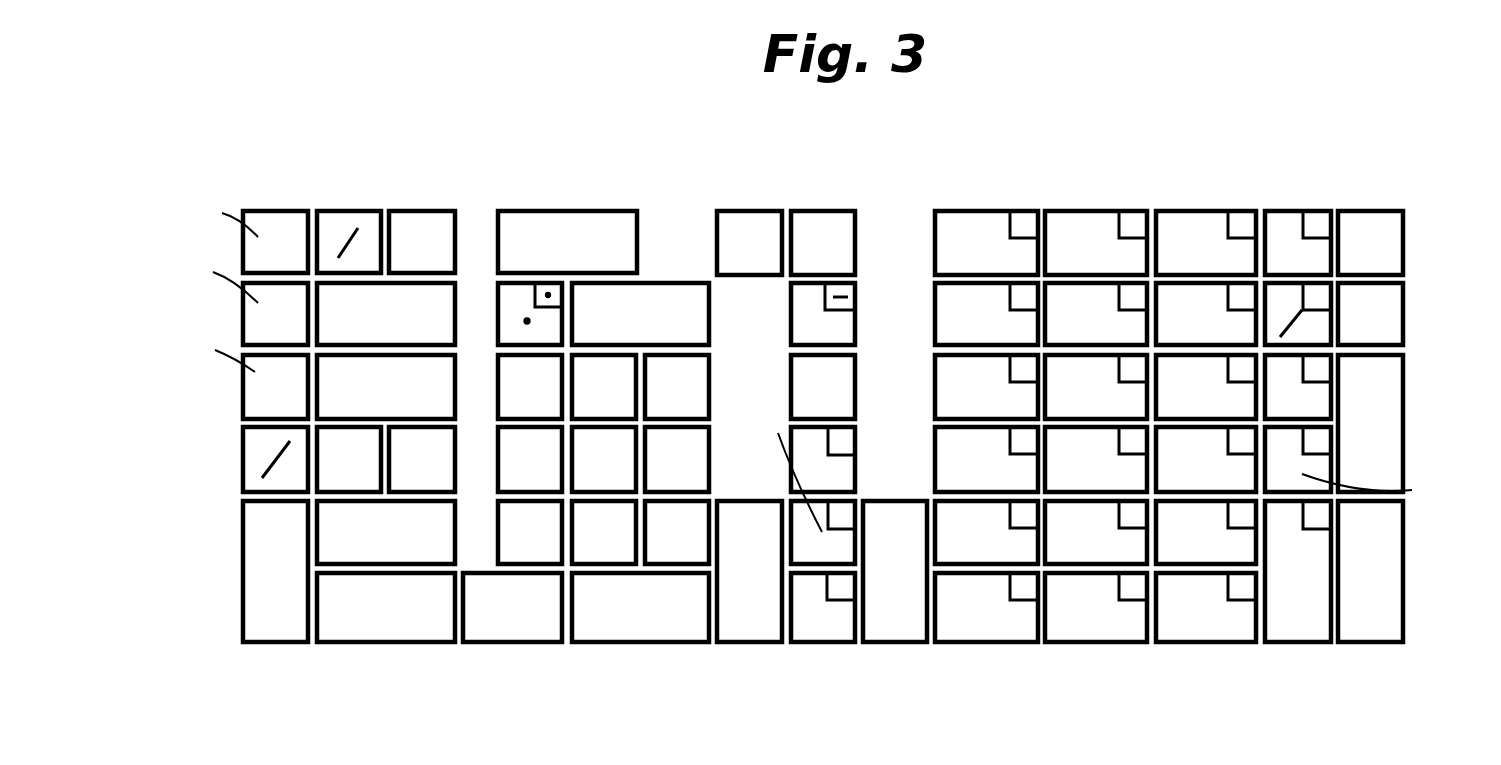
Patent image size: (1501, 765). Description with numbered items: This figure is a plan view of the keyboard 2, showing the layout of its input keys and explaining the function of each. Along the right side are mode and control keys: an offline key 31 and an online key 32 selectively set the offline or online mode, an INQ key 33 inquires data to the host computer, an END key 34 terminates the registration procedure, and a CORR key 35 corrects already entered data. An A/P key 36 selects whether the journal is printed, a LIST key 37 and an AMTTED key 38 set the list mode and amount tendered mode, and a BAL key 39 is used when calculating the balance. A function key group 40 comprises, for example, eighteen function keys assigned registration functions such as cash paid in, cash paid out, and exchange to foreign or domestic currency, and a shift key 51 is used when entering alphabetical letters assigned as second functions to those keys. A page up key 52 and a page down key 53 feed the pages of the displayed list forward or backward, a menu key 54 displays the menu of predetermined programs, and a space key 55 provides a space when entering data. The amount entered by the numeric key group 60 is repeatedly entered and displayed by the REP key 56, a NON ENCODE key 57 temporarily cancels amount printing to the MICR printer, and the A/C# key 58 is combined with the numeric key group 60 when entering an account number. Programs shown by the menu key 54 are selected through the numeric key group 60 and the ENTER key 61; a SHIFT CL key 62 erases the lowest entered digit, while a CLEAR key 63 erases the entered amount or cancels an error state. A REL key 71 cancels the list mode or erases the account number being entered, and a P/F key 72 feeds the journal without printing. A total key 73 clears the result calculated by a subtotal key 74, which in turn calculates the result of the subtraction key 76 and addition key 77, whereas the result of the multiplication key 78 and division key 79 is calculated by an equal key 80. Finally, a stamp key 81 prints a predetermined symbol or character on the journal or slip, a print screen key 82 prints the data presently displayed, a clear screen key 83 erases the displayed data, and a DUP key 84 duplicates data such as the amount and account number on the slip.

The keyboard 2 is at (1302, 76).
The offline key 31 is at (1366, 222).
The online key 32 is at (1392, 296).
The INQ key 33 is at (1392, 415).
The END key 34 is at (1388, 549).
The CORR key 35 is at (1288, 222).
The A/P key 36 is at (1313, 335).
The LIST key 37 is at (1318, 390).
The AMTTED key 38 is at (1315, 473).
The BAL key 39 is at (1300, 633).
The function key group 40 is at (1196, 190).
The shift key 51 is at (898, 632).
The page up key 52 is at (748, 220).
The page down key 53 is at (822, 218).
The menu key 54 is at (851, 336).
The space key 55 is at (844, 406).
The REP key 56 is at (841, 486).
The NON ENCODE key 57 is at (800, 515).
The A/C# key 58 is at (820, 632).
The numeric key group 60 is at (467, 648).
The ENTER key 61 is at (743, 632).
The SHIFT CL key 62 is at (659, 300).
The CLEAR key 63 is at (548, 220).
The REL key 71 is at (429, 220).
The P/F key 72 is at (356, 220).
The total key 73 is at (438, 330).
The subtotal key 74 is at (438, 400).
The subtraction key 76 is at (432, 520).
The addition key 77 is at (404, 620).
The multiplication key 78 is at (365, 474).
The division key 79 is at (440, 458).
The equal key 80 is at (255, 478).
The stamp key 81 is at (278, 220).
The print screen key 82 is at (258, 333).
The clear screen key 83 is at (258, 406).
The DUP key 84 is at (258, 546).